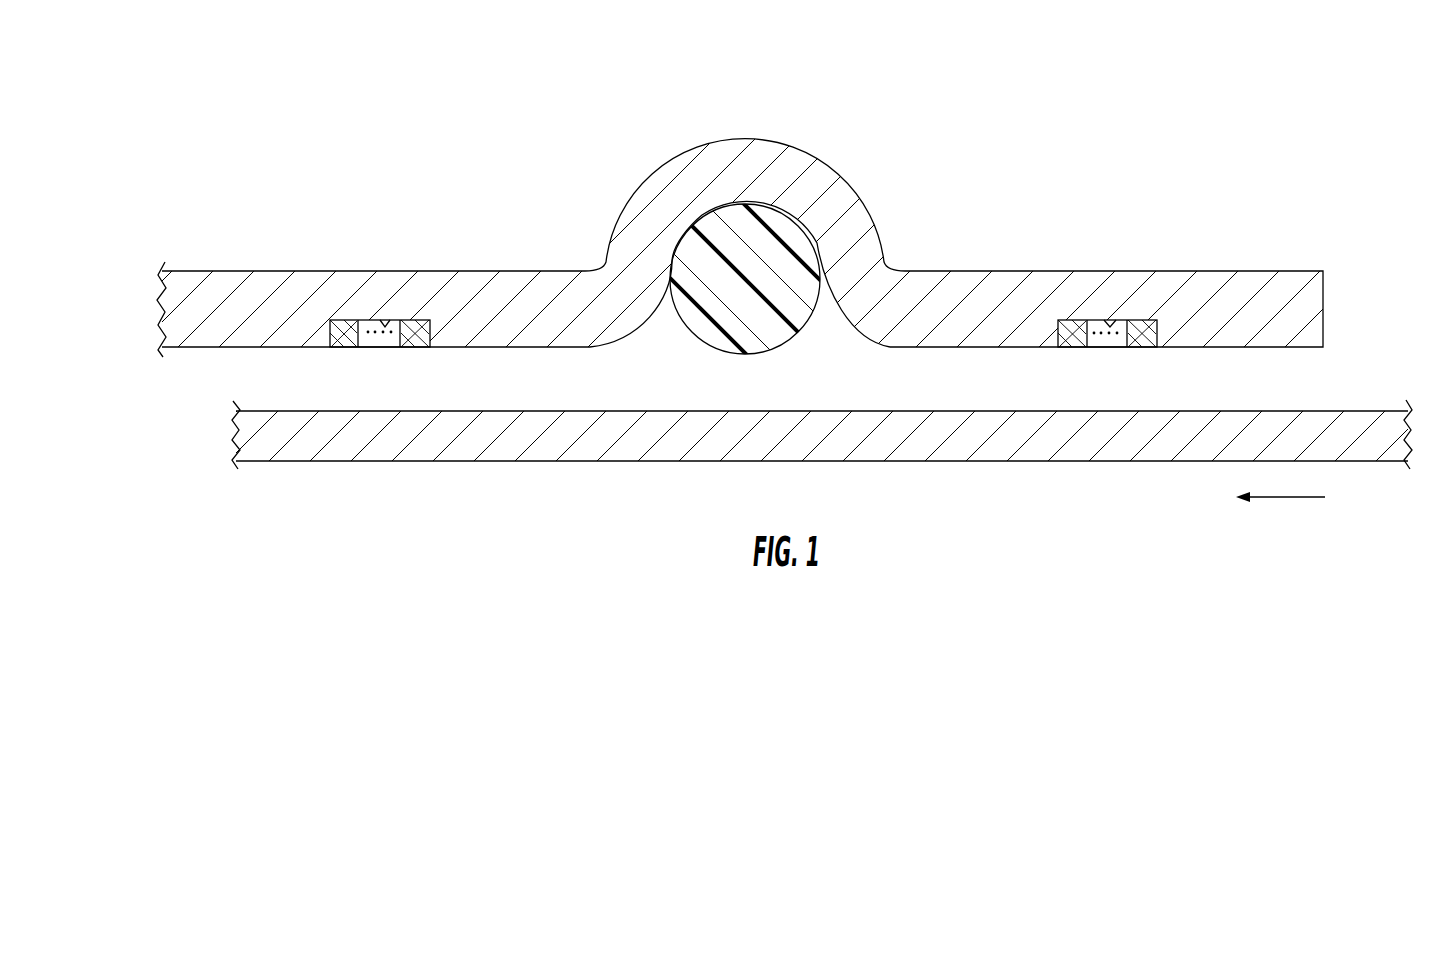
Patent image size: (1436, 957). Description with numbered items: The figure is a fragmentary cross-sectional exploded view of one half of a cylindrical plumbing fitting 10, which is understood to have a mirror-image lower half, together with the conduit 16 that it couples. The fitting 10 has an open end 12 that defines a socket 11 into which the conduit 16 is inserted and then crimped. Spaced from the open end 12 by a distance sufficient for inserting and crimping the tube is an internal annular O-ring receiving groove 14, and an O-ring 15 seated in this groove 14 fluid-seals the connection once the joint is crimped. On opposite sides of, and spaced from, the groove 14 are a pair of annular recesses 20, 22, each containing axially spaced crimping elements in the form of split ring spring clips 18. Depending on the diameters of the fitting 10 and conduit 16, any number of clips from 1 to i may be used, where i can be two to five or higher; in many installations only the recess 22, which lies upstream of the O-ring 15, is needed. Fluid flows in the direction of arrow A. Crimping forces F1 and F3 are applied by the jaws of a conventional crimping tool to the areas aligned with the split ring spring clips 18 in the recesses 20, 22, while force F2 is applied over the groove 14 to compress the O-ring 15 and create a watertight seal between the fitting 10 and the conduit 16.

The fitting 10 is at (922, 186).
The socket 11 is at (1328, 384).
The open end 12 is at (1313, 363).
The annular O-ring receiving groove 14 is at (760, 205).
The O-ring 15 is at (789, 306).
The conduit 16 is at (1038, 462).
The split ring spring clips 18 is at (407, 350).
The annular recess 20 is at (385, 327).
The annular recess 22 is at (1110, 327).
The first split ring spring clip 1 is at (339, 350).
The i-th split ring spring clip i is at (420, 350).
The crimping force F1 is at (373, 254).
The crimping force F2 is at (738, 125).
The crimping force F3 is at (1110, 258).
The arrow indicating direction of fluid flow A is at (1283, 497).